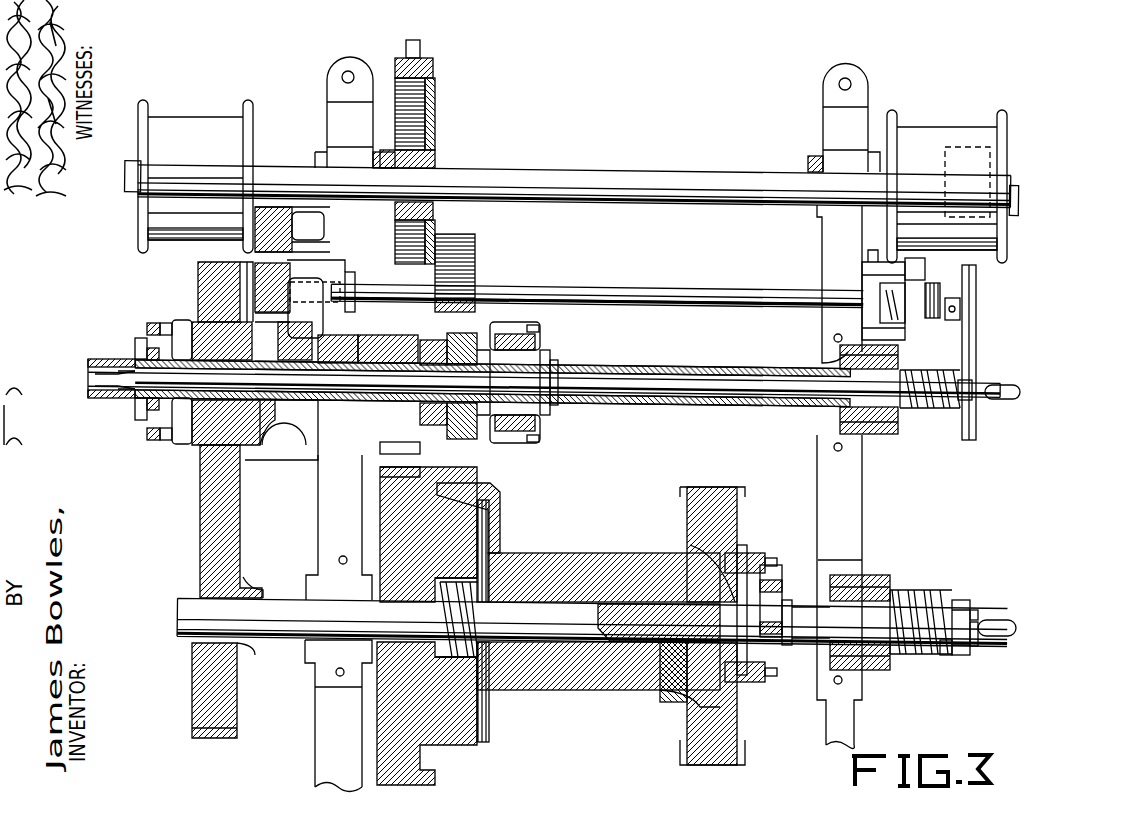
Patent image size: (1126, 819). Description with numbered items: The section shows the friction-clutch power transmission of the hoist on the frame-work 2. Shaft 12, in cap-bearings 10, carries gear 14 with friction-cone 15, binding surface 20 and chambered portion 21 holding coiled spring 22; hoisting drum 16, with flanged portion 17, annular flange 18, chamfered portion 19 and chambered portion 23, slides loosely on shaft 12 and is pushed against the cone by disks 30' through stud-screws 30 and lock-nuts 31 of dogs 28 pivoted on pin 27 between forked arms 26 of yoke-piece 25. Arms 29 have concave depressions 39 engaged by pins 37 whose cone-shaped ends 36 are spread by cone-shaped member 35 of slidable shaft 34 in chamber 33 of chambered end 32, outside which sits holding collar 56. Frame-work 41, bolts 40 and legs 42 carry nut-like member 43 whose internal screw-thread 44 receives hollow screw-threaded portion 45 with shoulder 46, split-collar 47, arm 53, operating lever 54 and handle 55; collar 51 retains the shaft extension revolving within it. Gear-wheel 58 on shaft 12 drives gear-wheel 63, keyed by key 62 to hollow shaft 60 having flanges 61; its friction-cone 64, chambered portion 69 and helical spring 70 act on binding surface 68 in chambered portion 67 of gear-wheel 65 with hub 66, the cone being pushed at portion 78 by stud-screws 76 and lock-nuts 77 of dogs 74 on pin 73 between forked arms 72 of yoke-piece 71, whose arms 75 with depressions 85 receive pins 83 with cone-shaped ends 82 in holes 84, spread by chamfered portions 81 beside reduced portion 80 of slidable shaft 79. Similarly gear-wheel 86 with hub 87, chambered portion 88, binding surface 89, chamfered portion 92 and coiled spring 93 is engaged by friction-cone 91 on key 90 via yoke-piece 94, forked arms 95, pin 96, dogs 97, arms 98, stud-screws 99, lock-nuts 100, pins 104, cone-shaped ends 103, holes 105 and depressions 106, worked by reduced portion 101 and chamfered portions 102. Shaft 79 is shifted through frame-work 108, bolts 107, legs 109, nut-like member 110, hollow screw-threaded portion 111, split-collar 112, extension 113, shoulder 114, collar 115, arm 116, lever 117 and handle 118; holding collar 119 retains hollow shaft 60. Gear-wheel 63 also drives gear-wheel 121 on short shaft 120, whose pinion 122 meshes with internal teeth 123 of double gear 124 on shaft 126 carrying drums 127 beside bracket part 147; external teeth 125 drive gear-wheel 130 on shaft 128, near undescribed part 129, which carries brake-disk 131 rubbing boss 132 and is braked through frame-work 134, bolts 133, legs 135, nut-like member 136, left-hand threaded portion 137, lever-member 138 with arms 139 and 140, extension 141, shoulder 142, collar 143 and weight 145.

The frame-work 2 is at (333, 96).
The cap-bearings 10 is at (312, 584).
The shaft 12 is at (292, 644).
The gears 14 is at (380, 490).
The friction-cone 15 is at (485, 520).
The hoisting drums 16 is at (548, 560).
The flanged portions 17 is at (706, 495).
The annular flanges 18 is at (495, 483).
The chamfered portions 19 is at (500, 500).
The inclined binding surfaces 20 is at (512, 722).
The chambered portion 21 is at (440, 657).
The coiled spring 22 is at (480, 614).
The chambered portion 23 is at (752, 702).
The yoke-pieces 25 is at (800, 592).
The forked arms 26 is at (750, 553).
The bolt or pin 27 is at (700, 560).
The dogs 28 is at (712, 566).
The outwardly extending arms 29 is at (850, 575).
The stud-screws 30 is at (784, 631).
The disks 30' is at (704, 624).
The lock-nuts 31 is at (775, 558).
The chambered end 32 is at (900, 612).
The chamber 33 is at (672, 690).
The slidable shaft 34 is at (930, 590).
The cone-shaped member 35 is at (900, 585).
The cone-shaped ends 36 is at (858, 580).
The pins 37 is at (694, 620).
The concave depression 39 is at (855, 585).
The bolts 40 is at (935, 602).
The frame-work 41 is at (930, 664).
The supporting legs 42 is at (940, 597).
The nut-like member 43 is at (955, 602).
The internal screw-thread 44 is at (945, 652).
The hollow screw-threaded portion 45 is at (968, 617).
The shoulder 46 is at (925, 670).
The split-collar 47 is at (952, 646).
The collar 51 is at (978, 618).
The upwardly extending arm 53 is at (975, 610).
The operating-lever 54 is at (1016, 629).
The handle-portion 55 is at (1010, 636).
The holding collars 56 is at (870, 670).
The gear-wheel 58 is at (200, 570).
The hollow-shaft 60 is at (768, 378).
The flanges 61 is at (380, 470).
The key 62 is at (225, 262).
The gear-wheel 63 is at (210, 320).
The friction-cone 64 is at (255, 470).
The gear-wheel 65 is at (280, 460).
The hub 66 is at (300, 310).
The chambered portion 67 is at (280, 445).
The inclined annular binding surface 68 is at (295, 510).
The chambered-portion 69 is at (260, 540).
The helical spring 70 is at (335, 348).
The yoke-piece 71 is at (233, 383).
The forked-arms 72 is at (172, 323).
The bolt or pin 73 is at (170, 445).
The dogs 74 is at (182, 320).
The outwardly extending arms 75 is at (145, 333).
The stud-screws 76 is at (150, 338).
The lock-nuts 77 is at (160, 328).
The portion 78 is at (200, 300).
The slidable shaft 79 is at (760, 400).
The reduced portion 80 is at (161, 378).
The chamfered portions 81 is at (95, 395).
The cone-shaped ends 82 is at (95, 365).
The pins 83 is at (147, 360).
The holes or perforations 84 is at (135, 358).
The concave depression 85 is at (135, 338).
The gear-wheel 86 is at (520, 322).
The hub-portion 87 is at (395, 448).
The chambered portion 88 is at (500, 445).
The inclined annular binding surface 89 is at (525, 325).
The key 90 is at (471, 382).
The friction-cone 91 is at (530, 445).
The chamfered portion 92 is at (410, 455).
The coiled-spring 93 is at (425, 355).
The yoke-piece 94 is at (558, 356).
The forked arms 95 is at (570, 320).
The bolt or pin 96 is at (545, 342).
The dogs 97 is at (560, 432).
The outwardly extending arms 98 is at (550, 350).
The stud-screws 99 is at (530, 340).
The lock-nuts 100 is at (538, 325).
The reduced portion 101 is at (565, 386).
The chamfered portions 102 is at (570, 392).
The cone-shaped ends 103 is at (560, 382).
The pins 104 is at (555, 376).
The holes or perforations 105 is at (557, 406).
The concave depression 106 is at (522, 382).
The bolts 107 is at (976, 334).
The frame-work 108 is at (976, 352).
The supporting legs 109 is at (977, 330).
The nut-like member 110 is at (962, 374).
The hollow screw-threaded portion 111 is at (986, 376).
The split-collar 112 is at (950, 424).
The extension 113 is at (930, 432).
The shoulder 114 is at (905, 434).
The collar 115 is at (985, 392).
The upwardly extending arm 116 is at (976, 410).
The operating lever 117 is at (1015, 398).
The handle-portion 118 is at (1000, 404).
The holding collar 119 is at (850, 420).
The short shaft 120 is at (345, 252).
The gear-wheel 121 is at (327, 225).
The pinion 122 is at (438, 242).
The gear 123 is at (436, 130).
The double gear 124 is at (436, 100).
The external teeth 125 is at (419, 58).
The shaft 126 is at (609, 168).
The drums 127 is at (198, 130).
The shaft 128 is at (678, 287).
The gear 129 is at (478, 258).
The gear-wheel 130 is at (480, 302).
The brake-disk 131 is at (376, 348).
The boss 132 is at (326, 292).
The bolts 133 is at (960, 262).
The frame-work 134 is at (940, 280).
The supporting legs 135 is at (868, 265).
The nut-like member 136 is at (965, 268).
The hollow screw-threaded portion 137 is at (940, 296).
The lever-member 138 is at (955, 286).
The arm 139 is at (986, 352).
The arm 140 is at (950, 270).
The extension 141 is at (960, 312).
The shoulder 142 is at (882, 292).
The collar 143 is at (975, 302).
The weight 145 is at (948, 174).
The foot 147 is at (345, 162).